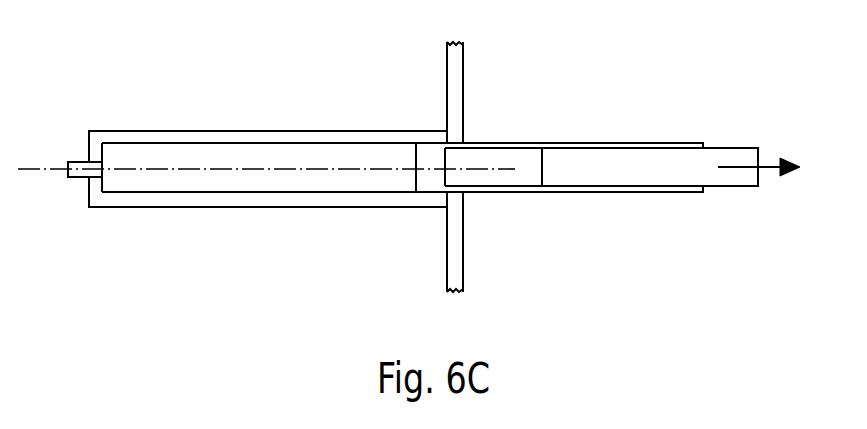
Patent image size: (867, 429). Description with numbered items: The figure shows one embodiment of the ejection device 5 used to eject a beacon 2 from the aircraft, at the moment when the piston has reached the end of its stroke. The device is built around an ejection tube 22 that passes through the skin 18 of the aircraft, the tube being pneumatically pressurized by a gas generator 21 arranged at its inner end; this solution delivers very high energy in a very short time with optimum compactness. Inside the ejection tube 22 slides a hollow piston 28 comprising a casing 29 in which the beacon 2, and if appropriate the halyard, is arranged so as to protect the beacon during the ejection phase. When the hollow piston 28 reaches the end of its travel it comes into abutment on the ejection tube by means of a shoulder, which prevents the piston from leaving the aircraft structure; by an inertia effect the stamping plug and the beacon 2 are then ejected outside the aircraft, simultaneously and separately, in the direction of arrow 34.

The ejection device 5 is at (210, 110).
The gas generator 21 is at (260, 163).
The ejection tube 22 is at (362, 124).
The skin 18 is at (458, 50).
The hollow piston 28 is at (503, 137).
The casing 29 is at (521, 166).
The beacon 2 is at (727, 188).
The arrow 34 is at (767, 158).